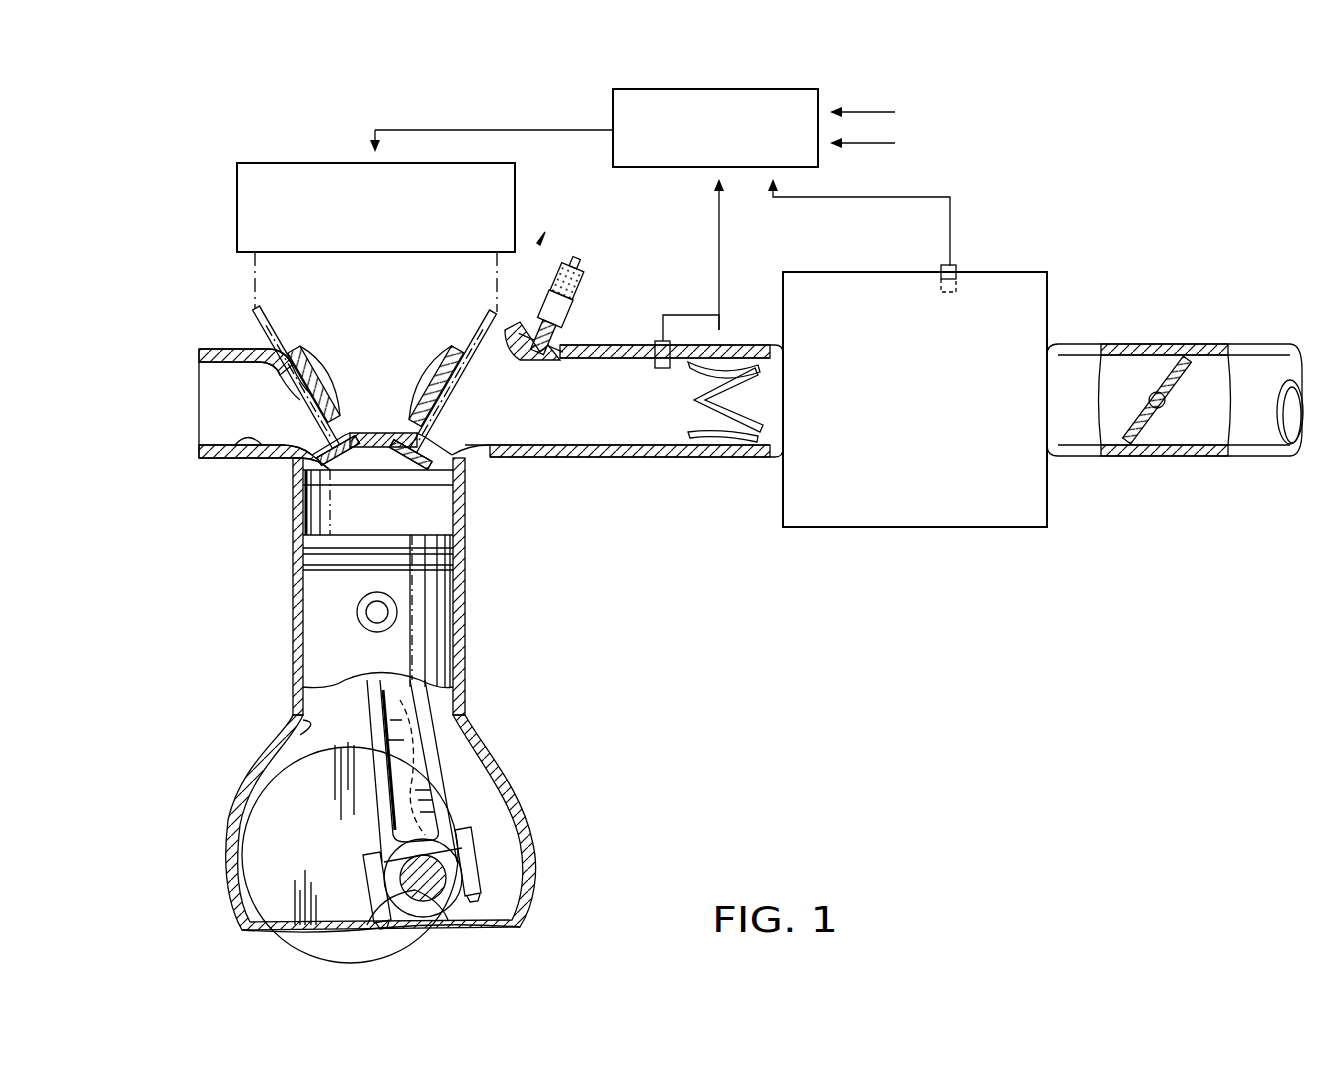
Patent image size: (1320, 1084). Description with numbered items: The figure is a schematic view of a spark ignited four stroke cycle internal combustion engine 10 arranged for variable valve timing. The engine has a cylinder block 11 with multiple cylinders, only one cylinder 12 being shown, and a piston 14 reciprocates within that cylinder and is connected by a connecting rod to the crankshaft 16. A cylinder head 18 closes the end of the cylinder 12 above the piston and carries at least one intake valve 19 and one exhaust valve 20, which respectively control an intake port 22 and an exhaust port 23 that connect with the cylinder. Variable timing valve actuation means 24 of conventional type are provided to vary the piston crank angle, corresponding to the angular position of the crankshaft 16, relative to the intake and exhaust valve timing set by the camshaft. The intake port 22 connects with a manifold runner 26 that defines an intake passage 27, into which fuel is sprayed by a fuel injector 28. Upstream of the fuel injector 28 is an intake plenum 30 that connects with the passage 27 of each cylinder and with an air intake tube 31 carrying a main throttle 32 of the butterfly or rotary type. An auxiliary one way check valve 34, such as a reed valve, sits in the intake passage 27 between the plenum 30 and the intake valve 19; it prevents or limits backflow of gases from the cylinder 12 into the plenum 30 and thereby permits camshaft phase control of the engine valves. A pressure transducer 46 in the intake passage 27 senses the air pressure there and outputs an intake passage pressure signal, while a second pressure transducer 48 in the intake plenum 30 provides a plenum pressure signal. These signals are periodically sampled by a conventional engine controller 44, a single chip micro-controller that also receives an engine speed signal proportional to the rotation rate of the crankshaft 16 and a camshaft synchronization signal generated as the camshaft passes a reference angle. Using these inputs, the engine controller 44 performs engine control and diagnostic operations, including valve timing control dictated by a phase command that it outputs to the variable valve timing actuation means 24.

The internal combustion engine 10 is at (548, 236).
The cylinder block 11 is at (297, 590).
The cylinder 12 is at (300, 717).
The piston 14 is at (315, 644).
The crankshaft 16 is at (298, 803).
The cylinder head 18 is at (297, 472).
The intake valve 19 is at (478, 340).
The exhaust valve 20 is at (273, 345).
The intake port 22 is at (485, 447).
The exhaust port 23 is at (250, 443).
The variable timing valve actuation means 24 is at (245, 205).
The manifold runner 26 is at (578, 352).
The intake passage 27 is at (617, 422).
The fuel injector 28 is at (585, 268).
The intake plenum 30 is at (922, 295).
The air intake tube 31 is at (1113, 375).
The main throttle 32 is at (1172, 365).
The check valve 34 is at (712, 436).
The engine controller 44 is at (613, 148).
The pressure transducer 46 is at (658, 340).
The pressure transducer 48 is at (955, 268).